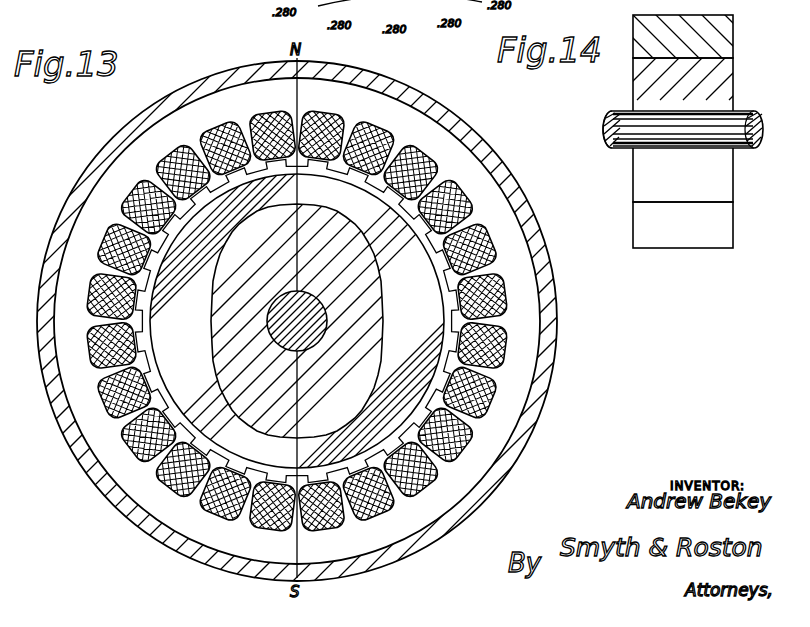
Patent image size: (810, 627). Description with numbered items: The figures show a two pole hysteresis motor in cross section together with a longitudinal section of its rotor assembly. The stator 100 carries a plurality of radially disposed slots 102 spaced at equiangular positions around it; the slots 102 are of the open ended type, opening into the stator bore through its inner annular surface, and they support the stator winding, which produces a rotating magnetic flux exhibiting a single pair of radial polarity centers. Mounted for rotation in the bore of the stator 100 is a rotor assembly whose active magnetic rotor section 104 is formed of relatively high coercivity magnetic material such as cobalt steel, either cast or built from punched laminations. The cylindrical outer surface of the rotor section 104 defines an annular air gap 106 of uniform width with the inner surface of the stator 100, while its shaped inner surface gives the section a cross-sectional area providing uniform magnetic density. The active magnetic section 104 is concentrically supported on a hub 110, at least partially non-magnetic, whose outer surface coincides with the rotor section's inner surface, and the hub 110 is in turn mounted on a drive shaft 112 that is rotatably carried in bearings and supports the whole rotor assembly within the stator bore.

In FIG. 13, the stator 100 is at (200, 110).
In FIG. 13, the slots 102 is at (378, 127).
In FIG. 13, the active magnetic rotor section 104 is at (182, 247).
In FIG. 14, the active magnetic rotor section 104 is at (715, 230).
In FIG. 13, the annular air gap 106 is at (410, 433).
In FIG. 13, the hub 110 is at (350, 308).
In FIG. 14, the hub 110 is at (723, 178).
In FIG. 13, the drive shaft 112 is at (286, 304).
In FIG. 14, the drive shaft 112 is at (742, 116).